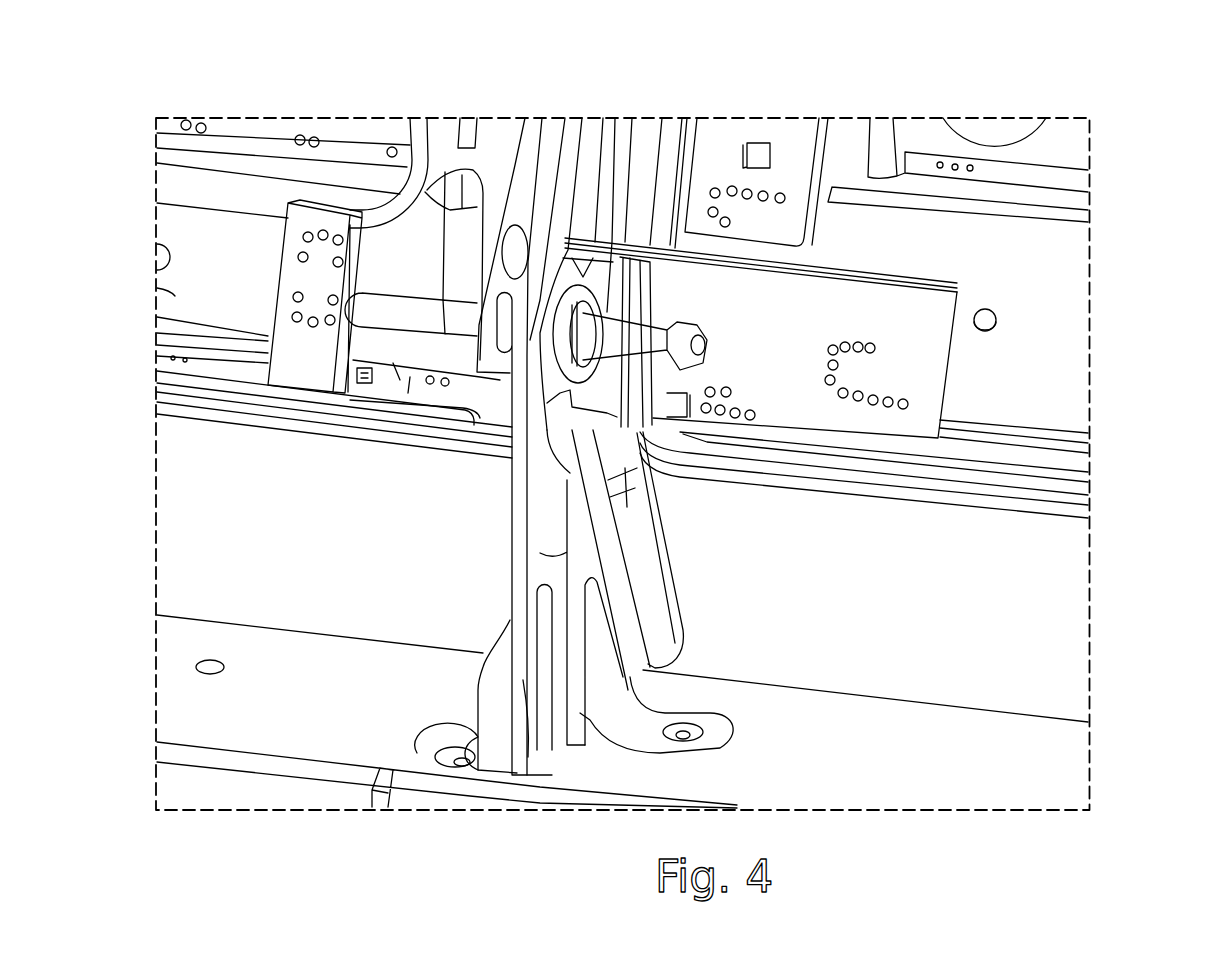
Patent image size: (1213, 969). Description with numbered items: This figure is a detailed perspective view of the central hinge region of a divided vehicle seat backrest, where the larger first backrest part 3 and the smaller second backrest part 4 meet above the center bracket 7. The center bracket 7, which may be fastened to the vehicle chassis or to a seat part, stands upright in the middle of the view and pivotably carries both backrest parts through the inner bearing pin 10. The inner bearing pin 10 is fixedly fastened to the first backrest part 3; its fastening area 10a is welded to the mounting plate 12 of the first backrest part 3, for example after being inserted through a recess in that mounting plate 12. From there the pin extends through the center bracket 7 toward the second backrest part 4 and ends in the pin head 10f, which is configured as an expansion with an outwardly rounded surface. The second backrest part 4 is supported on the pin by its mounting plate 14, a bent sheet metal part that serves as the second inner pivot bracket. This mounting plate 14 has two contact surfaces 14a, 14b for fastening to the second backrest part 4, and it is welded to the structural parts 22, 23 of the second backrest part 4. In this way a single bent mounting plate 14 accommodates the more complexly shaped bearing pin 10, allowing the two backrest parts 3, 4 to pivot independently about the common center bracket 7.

The first backrest part 3 is at (175, 292).
The second backrest part 4 is at (1075, 240).
The center bracket 7 is at (640, 735).
The inner bearing pin 10 is at (617, 340).
The fastening area 10a is at (378, 330).
The pin head 10f is at (700, 332).
The mounting plate 12 is at (435, 215).
The mounting plate 14 is at (758, 130).
The contact surface 14a is at (673, 120).
The contact surface 14b is at (923, 282).
The structural part 22 is at (1078, 415).
The structural part 23 is at (852, 130).